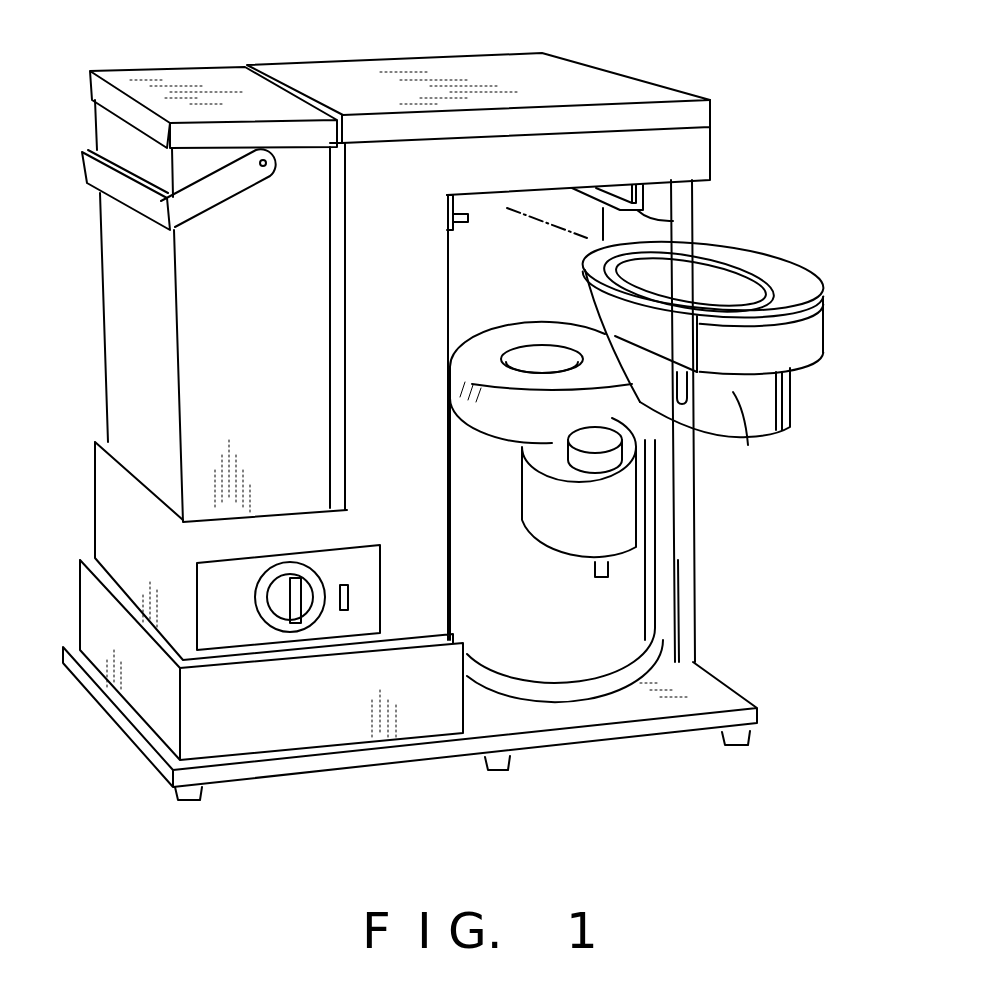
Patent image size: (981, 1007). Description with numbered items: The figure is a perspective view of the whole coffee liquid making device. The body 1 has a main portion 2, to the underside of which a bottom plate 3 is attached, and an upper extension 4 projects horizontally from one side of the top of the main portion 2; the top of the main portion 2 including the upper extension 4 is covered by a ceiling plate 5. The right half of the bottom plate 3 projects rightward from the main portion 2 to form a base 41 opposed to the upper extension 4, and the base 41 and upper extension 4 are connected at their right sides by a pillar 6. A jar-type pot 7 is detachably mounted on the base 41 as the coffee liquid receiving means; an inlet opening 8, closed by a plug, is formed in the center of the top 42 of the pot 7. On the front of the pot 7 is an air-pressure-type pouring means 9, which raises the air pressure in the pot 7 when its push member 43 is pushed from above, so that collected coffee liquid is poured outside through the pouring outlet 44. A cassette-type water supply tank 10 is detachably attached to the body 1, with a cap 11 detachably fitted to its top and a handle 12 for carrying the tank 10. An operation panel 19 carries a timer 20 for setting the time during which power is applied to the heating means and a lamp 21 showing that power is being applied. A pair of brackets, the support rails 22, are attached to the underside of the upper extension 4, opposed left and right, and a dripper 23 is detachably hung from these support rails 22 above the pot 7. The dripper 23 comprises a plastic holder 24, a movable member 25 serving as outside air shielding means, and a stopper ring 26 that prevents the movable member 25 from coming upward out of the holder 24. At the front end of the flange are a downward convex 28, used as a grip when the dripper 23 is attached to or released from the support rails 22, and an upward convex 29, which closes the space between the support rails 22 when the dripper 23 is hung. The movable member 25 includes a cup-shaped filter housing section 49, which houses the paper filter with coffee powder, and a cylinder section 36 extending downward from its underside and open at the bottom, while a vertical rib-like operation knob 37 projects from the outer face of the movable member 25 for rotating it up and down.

The body 1 is at (80, 545).
The main portion 2 is at (93, 621).
The bottom plate 3 is at (342, 773).
The upper extension 4 is at (703, 146).
The ceiling plate 5 is at (407, 78).
The pillar 6 is at (683, 563).
The pot 7 is at (582, 680).
The inlet opening 8 is at (522, 350).
The pouring means 9 is at (558, 527).
The water supply tank 10 is at (113, 318).
The cap 11 is at (180, 78).
The handle 12 is at (108, 188).
The operation panel 19 is at (222, 633).
The timer 20 is at (273, 613).
The lamp 21 is at (346, 612).
The support rails 22 is at (447, 232).
The dripper 23 is at (812, 272).
The holder 24 is at (590, 268).
The movable member 25 is at (797, 414).
The stopper ring 26 is at (757, 272).
The downward convex 28 is at (812, 360).
The upward convex 29 is at (818, 312).
The cylinder section 36 is at (716, 432).
The operation knob 37 is at (678, 393).
The base 41 is at (703, 688).
The top 42 is at (470, 370).
The push member 43 is at (585, 437).
The pouring outlet 44 is at (600, 580).
The filter housing section 49 is at (748, 445).